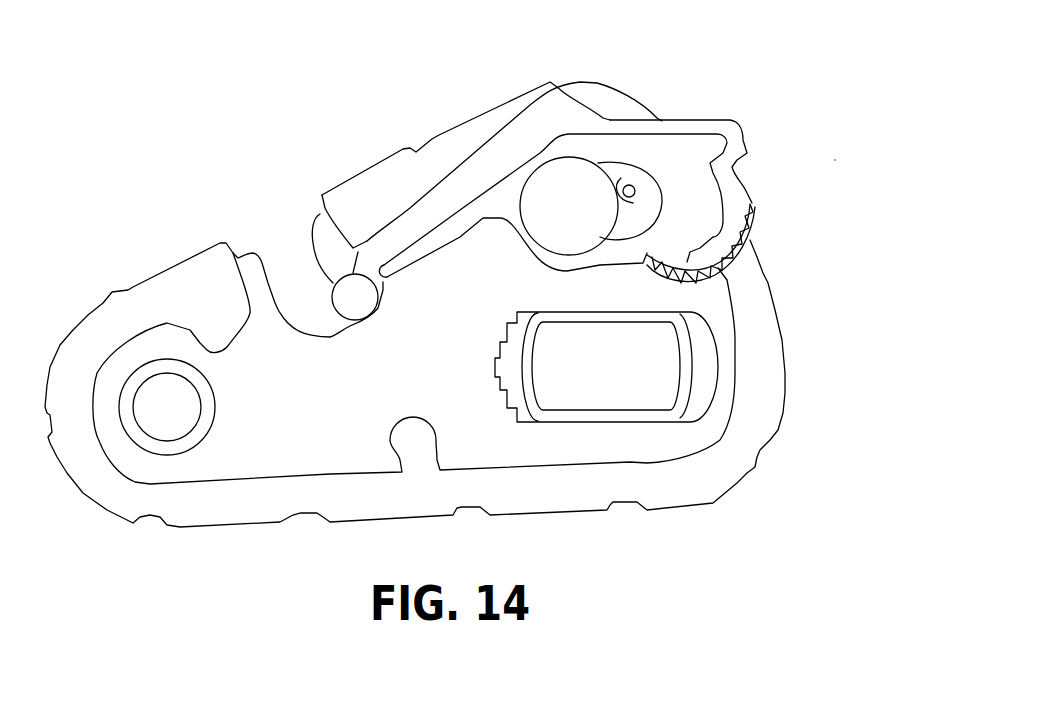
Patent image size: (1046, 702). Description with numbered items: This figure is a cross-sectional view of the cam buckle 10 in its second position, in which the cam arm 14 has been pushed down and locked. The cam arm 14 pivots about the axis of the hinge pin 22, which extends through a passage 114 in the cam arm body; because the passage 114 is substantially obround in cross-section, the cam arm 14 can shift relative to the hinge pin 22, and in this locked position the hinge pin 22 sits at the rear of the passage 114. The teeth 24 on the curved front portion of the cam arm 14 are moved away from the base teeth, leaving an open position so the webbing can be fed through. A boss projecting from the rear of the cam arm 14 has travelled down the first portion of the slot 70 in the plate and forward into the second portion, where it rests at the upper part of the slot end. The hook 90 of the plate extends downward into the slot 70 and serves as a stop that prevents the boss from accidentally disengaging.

The cam buckle 10 is at (842, 153).
The cam arm 14 is at (510, 137).
The hinge pin 22 is at (570, 195).
The teeth 24 is at (753, 230).
The slot 70 is at (276, 235).
The hook 90 is at (333, 281).
The passage 114 is at (650, 200).